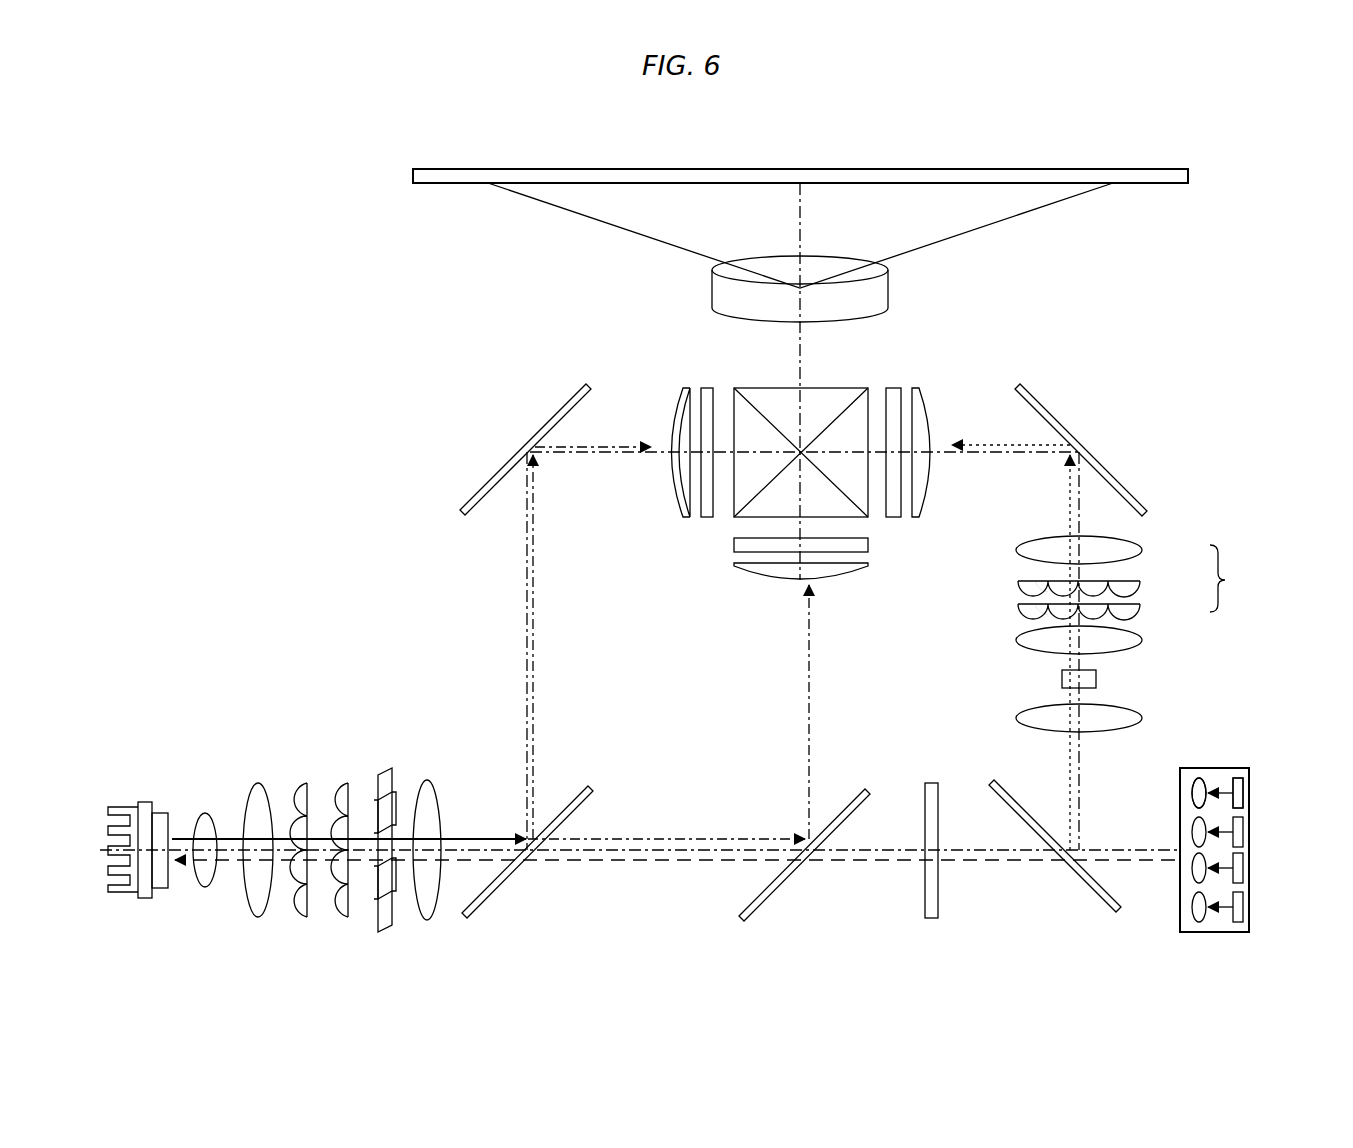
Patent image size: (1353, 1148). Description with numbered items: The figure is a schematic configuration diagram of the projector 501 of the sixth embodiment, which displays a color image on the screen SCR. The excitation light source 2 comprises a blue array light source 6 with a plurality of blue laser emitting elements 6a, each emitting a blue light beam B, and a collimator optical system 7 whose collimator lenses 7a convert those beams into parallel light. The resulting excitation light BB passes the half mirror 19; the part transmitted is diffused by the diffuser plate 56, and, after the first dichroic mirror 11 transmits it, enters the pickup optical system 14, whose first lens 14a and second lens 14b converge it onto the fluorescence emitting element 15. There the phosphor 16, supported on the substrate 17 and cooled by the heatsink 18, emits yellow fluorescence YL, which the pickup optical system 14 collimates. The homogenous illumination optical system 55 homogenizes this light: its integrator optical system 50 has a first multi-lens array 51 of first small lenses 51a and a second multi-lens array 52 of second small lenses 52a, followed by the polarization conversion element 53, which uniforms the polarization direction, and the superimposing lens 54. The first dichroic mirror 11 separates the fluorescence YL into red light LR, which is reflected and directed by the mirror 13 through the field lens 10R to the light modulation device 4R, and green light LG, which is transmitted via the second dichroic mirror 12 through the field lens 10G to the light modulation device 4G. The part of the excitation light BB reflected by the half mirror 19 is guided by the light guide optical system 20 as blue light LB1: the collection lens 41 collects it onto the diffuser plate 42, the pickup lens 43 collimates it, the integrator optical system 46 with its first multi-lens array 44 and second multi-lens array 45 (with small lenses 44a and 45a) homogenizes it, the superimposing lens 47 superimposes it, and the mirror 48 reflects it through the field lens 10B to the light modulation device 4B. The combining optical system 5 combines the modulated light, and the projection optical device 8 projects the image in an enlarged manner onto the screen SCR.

The projector 501 is at (1183, 158).
The screen SCR is at (1157, 184).
The projection optical device 8 is at (886, 283).
The combining optical system 5 is at (820, 392).
The light modulation device 4R is at (708, 394).
The field lens 10R is at (684, 394).
The light modulation device 4B is at (890, 394).
The field lens 10B is at (918, 394).
The light modulation device 4G is at (734, 547).
The field lens 10G is at (742, 568).
The red light LR is at (537, 755).
The blue light LB1 is at (1068, 782).
The fluorescence YL is at (473, 838).
The green light LG is at (812, 603).
The excitation light BB is at (865, 863).
The mirror 13 is at (500, 468).
The mirror 48 is at (1100, 470).
The first dichroic mirror 11 is at (582, 800).
The second dichroic mirror 12 is at (773, 888).
The half mirror 19 is at (1083, 892).
The light guide optical system 20 is at (1240, 512).
The superimposing lens 47 is at (1128, 548).
The integrator optical system 46 is at (1143, 582).
The second multi-lens array 45 is at (1130, 582).
The lens 45a is at (1030, 590).
The first multi-lens array 44 is at (1130, 608).
The lens 44a is at (1030, 612).
The pickup lens 43 is at (1128, 638).
The diffuser plate 42 is at (1090, 680).
The collection lens 41 is at (1108, 716).
The excitation light source 2 is at (1254, 826).
The collimator optical system 7 is at (1203, 775).
The collimator lens 7a is at (1192, 792).
The blue array light source 6 is at (1240, 770).
The blue laser emitting element 6a is at (1242, 785).
The blue light beam B is at (1225, 792).
The diffuser plate 56 is at (932, 790).
The fluorescence emitting element 15 is at (123, 755).
The phosphor 16 is at (160, 813).
The substrate 17 is at (146, 803).
The heatsink 18 is at (122, 806).
The pickup optical system 14 is at (265, 710).
The first lens 14a is at (205, 812).
The second lens 14b is at (258, 782).
The homogenous illumination optical system 55 is at (470, 658).
The integrator optical system 50 is at (375, 710).
The first multi-lens array 51 is at (298, 778).
The first small lens 51a is at (300, 905).
The second multi-lens array 52 is at (341, 778).
The second small lens 52a is at (343, 905).
The polarization conversion element 53 is at (384, 770).
The superimposing lens 54 is at (424, 778).